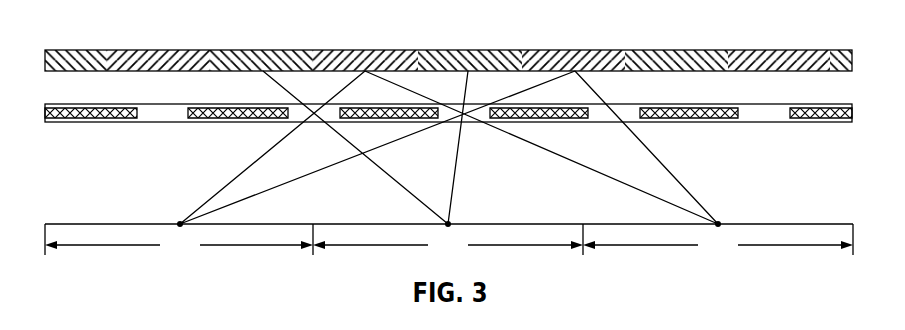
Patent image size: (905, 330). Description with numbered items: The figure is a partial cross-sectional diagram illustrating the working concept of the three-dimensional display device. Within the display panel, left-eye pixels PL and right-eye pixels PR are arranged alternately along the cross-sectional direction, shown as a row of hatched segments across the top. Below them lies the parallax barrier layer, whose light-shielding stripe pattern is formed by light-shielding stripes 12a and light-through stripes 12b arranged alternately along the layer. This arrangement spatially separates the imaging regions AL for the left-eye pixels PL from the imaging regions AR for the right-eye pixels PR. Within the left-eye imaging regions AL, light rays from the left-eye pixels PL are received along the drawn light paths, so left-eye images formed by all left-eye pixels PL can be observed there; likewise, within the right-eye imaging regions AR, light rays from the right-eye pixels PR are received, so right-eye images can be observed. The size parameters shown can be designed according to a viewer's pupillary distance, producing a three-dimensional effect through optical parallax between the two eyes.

The light-shielding stripes 12a is at (720, 117).
The light-through stripes 12b is at (166, 113).
The left-eye pixels PL is at (448, 47).
The right-eye pixels PR is at (468, 47).
The right-eye imaging regions AR is at (449, 245).
The left-eye imaging regions AL is at (448, 245).